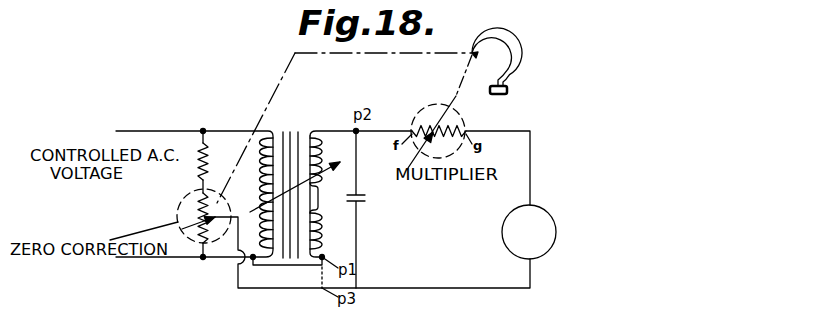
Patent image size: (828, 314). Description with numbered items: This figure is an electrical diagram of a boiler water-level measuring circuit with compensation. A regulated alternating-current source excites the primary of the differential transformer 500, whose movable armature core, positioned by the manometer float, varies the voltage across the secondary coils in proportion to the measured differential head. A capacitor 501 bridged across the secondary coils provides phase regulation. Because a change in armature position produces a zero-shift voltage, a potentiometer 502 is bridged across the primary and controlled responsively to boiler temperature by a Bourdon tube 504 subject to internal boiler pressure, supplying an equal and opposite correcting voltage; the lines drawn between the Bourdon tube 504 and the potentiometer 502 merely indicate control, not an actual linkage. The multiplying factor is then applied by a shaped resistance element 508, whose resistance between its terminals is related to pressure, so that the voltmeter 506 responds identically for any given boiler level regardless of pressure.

The differential transformer 500 is at (323, 127).
The capacitor 501 is at (375, 209).
The potentiometer 502 is at (196, 193).
The Bourdon tube 504 is at (521, 52).
The voltmeter 506 is at (556, 224).
The shaped resistance element 508 is at (425, 109).